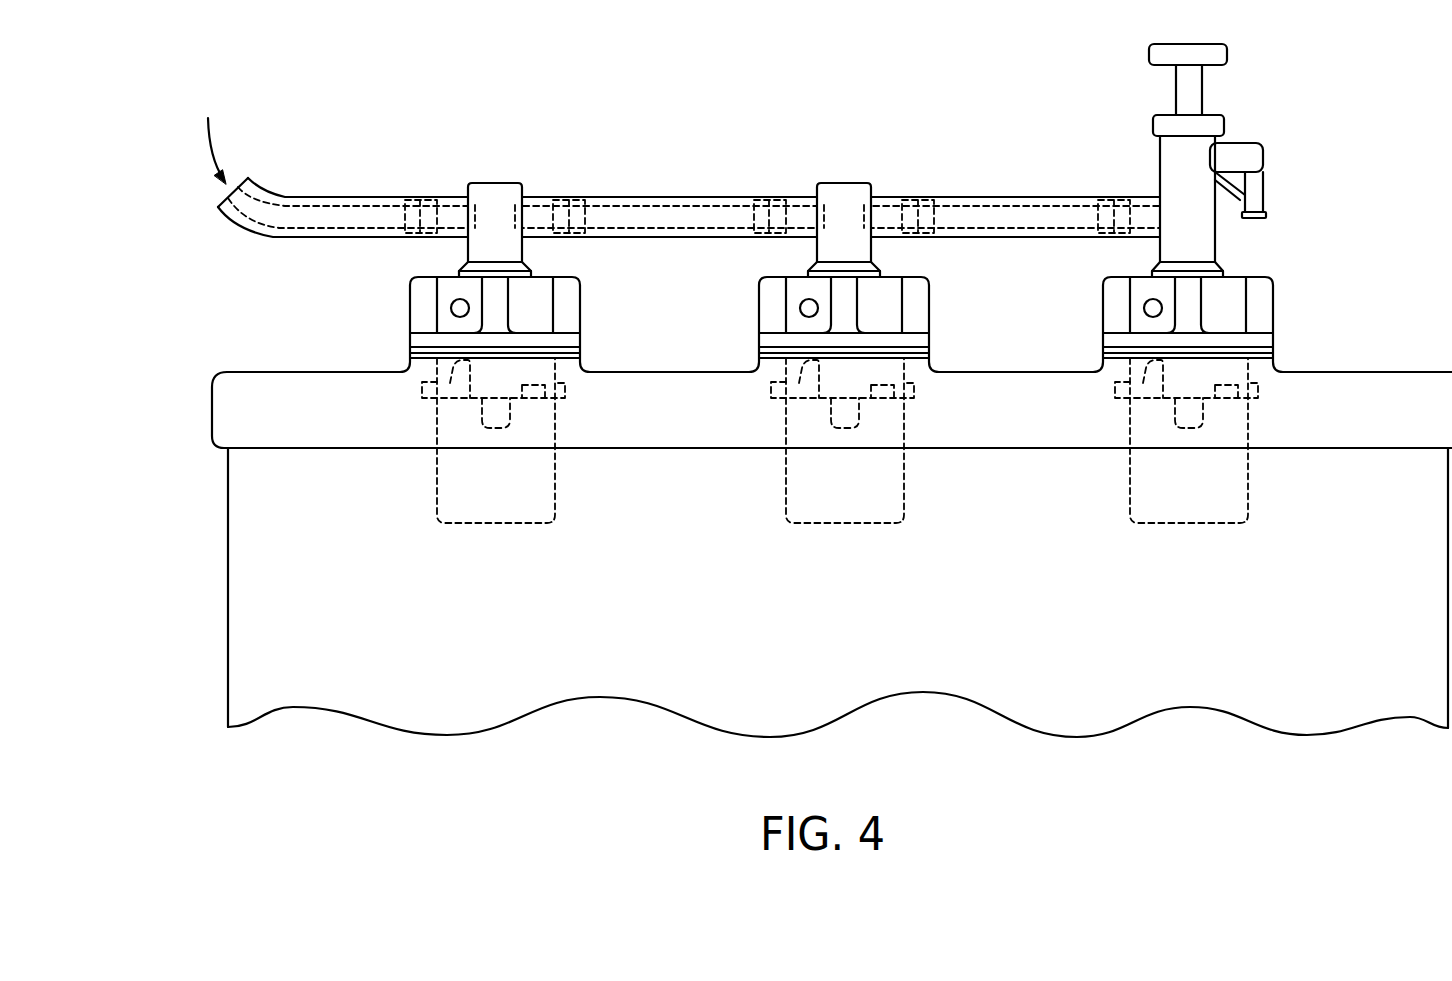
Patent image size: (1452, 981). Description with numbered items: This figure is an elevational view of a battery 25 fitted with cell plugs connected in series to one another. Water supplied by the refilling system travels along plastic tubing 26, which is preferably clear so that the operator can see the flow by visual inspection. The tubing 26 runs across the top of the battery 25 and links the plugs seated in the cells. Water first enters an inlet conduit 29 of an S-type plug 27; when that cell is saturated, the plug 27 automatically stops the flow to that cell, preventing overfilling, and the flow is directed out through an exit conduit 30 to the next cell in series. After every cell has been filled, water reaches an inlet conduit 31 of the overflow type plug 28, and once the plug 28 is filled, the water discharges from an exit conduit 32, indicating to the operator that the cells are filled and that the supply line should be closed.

The battery 25 is at (228, 545).
The plastic tubing 26 is at (338, 196).
The S-type cell plug 27 is at (410, 308).
The overflow type cell plug 28 is at (1275, 310).
The inlet conduit 29 is at (447, 199).
The exit conduit 30 is at (548, 205).
The inlet conduit 31 is at (1122, 193).
The exit conduit 32 is at (1263, 143).